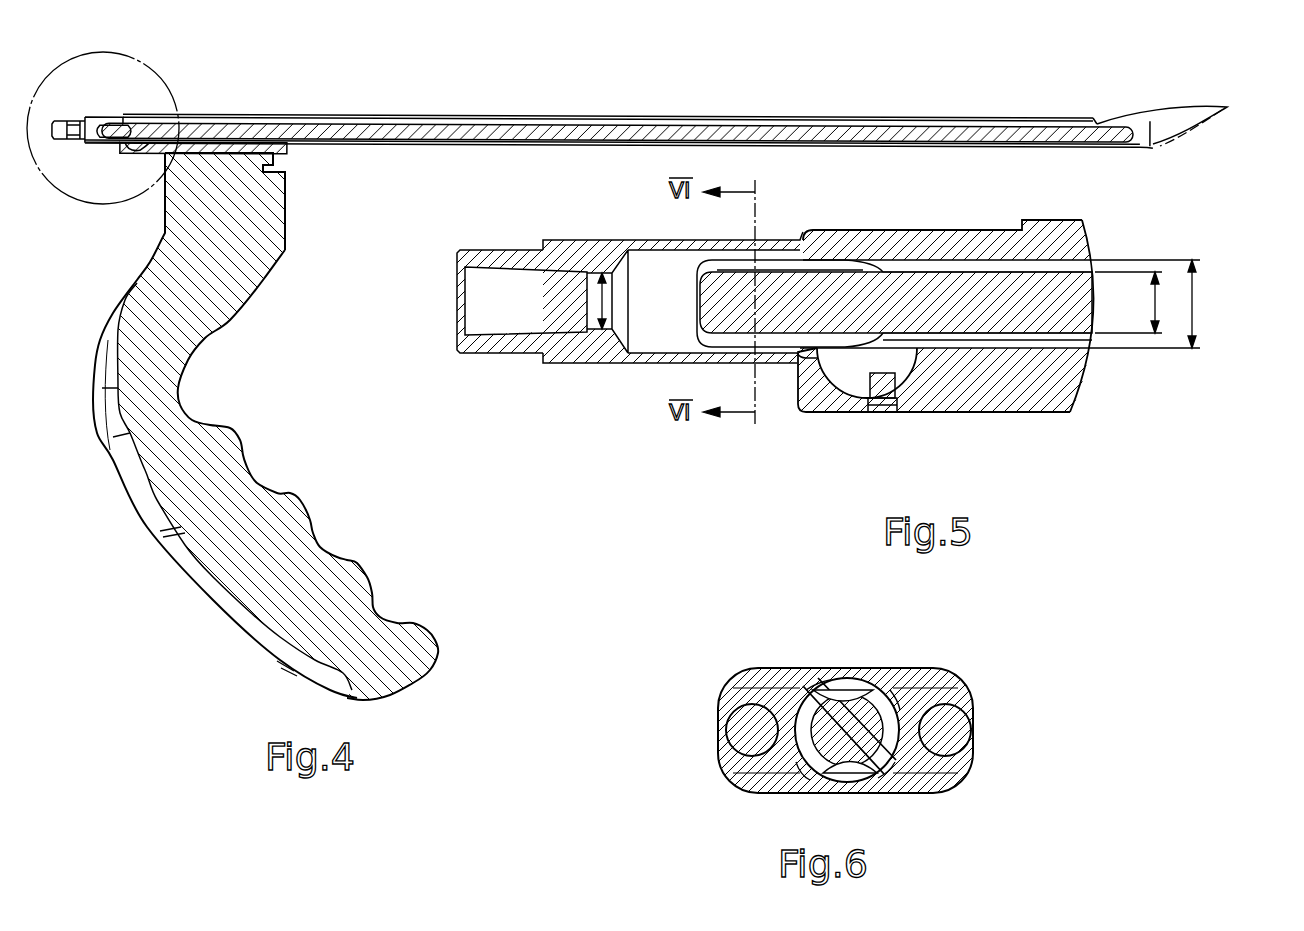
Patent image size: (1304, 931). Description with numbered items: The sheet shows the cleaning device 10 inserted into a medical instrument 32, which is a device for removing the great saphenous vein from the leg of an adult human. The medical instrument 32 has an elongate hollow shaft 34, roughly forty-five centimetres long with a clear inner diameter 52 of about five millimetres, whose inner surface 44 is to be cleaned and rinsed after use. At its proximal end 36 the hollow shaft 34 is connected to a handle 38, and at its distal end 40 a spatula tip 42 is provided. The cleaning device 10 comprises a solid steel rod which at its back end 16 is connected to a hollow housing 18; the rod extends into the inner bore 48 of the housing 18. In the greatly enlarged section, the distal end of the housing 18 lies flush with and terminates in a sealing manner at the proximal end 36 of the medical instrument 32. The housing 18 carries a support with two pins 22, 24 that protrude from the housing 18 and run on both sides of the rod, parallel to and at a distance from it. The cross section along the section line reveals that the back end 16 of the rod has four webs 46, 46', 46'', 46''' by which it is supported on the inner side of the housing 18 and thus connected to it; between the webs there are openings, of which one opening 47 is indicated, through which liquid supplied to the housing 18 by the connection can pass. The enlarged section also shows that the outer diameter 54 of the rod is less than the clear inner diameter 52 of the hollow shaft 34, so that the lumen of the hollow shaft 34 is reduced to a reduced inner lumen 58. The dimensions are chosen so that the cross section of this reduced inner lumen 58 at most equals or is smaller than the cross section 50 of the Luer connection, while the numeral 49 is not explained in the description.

In FIG. 4, the device 10 is at (683, 132).
In FIG. 5, the end 16 is at (832, 292).
In FIG. 6, the end 16 is at (846, 727).
In FIG. 5, the housing 18 is at (660, 243).
In FIG. 6, the housing 18 is at (927, 686).
In FIG. 6, the pin 22 is at (946, 730).
In FIG. 6, the pin 24 is at (748, 730).
In FIG. 4, the medical instrument 32 is at (186, 652).
In FIG. 5, the hollow shaft 34 is at (988, 250).
In FIG. 5, the proximal end 36 is at (832, 398).
In FIG. 4, the handle 38 is at (290, 512).
In FIG. 4, the distal end 40 is at (1100, 123).
In FIG. 4, the spatula tip 42 is at (1200, 125).
In FIG. 5, the inner surface 44 is at (928, 262).
In FIG. 6, the web 46 is at (795, 644).
In FIG. 6, the web 46' is at (934, 650).
In FIG. 6, the web 46'' is at (978, 790).
In FIG. 6, the web 46''' is at (766, 804).
In FIG. 5, the opening 47 is at (768, 259).
In FIG. 6, the opening 47 is at (855, 778).
In FIG. 5, the inner bore 48 is at (673, 336).
In FIG. 6, the inner bore 48 is at (830, 687).
In FIG. 5, the shoulder 49 is at (801, 352).
In FIG. 5, the cross section 50 is at (597, 302).
In FIG. 5, the clear inner diameter 52 is at (1197, 308).
In FIG. 5, the outer diameter 54 is at (1150, 310).
In FIG. 5, the reduced inner lumen 58 is at (1074, 263).